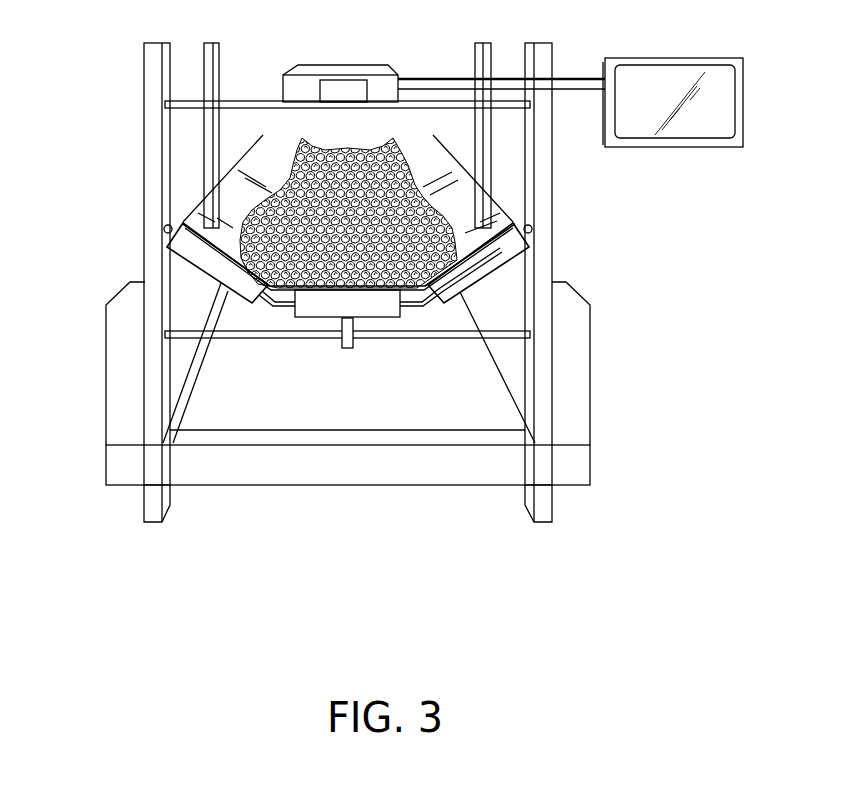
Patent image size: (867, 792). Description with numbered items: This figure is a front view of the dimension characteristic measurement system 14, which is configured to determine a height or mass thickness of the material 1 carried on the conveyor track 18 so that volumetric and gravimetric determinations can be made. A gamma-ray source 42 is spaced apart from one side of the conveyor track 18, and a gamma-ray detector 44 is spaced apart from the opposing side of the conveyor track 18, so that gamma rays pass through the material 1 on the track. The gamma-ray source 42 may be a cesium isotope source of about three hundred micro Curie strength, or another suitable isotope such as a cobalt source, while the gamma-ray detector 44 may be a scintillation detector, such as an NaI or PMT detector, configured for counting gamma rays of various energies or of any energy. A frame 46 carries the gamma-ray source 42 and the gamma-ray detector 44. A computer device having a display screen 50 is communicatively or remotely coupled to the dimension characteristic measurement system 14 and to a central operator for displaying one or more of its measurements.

The material 1 is at (400, 232).
The dimension characteristic measurement system 14 is at (396, 294).
The conveyor track 18 is at (482, 248).
The gamma-ray source 42 is at (353, 348).
The gamma-ray detector 44 is at (292, 75).
The frame 46 is at (145, 170).
The display screen 50 is at (665, 58).